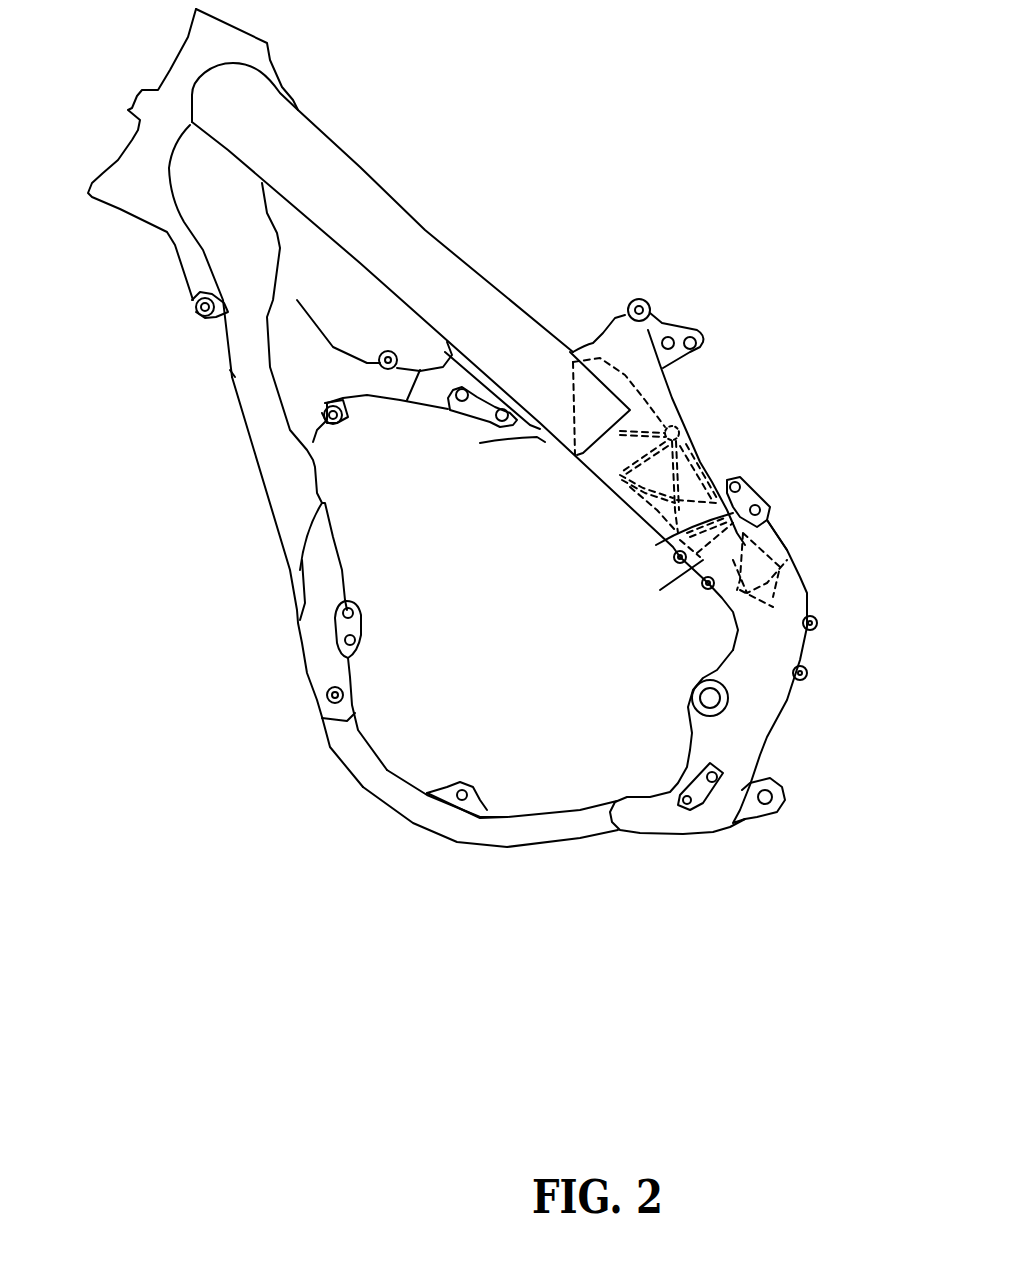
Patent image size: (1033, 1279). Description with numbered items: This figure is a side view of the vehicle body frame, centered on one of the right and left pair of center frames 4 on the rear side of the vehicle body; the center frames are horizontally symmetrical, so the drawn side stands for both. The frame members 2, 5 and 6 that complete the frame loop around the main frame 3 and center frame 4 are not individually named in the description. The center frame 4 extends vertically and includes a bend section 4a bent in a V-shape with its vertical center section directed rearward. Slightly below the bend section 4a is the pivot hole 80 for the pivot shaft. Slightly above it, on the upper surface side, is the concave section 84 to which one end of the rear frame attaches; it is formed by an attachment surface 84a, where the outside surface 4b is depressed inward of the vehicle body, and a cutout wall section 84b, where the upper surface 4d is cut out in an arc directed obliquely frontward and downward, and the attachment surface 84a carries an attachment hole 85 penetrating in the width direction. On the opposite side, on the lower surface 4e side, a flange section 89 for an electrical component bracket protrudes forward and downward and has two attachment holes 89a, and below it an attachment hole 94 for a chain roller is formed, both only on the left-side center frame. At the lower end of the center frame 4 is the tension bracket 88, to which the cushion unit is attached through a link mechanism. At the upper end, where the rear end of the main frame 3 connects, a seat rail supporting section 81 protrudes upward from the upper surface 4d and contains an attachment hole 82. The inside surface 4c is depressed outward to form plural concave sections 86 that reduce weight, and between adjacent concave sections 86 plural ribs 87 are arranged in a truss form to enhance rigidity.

The head pipe 2 is at (152, 118).
The main frame 3 is at (372, 195).
The center frame 4 is at (707, 457).
The bend section 4a is at (773, 623).
The outside surface 4b is at (663, 368).
The inside surface 4c is at (620, 472).
The upper surface 4d is at (677, 407).
The lower surface 4e is at (480, 443).
The down tube 5 is at (285, 497).
The lower frame tube 6 is at (570, 820).
The pivot hole 80 is at (698, 693).
The seat rail supporting section 81 is at (628, 320).
The attachment hole 82 is at (640, 299).
The concave section 84 is at (753, 487).
The attachment surface 84a is at (767, 503).
The cutout wall section 84b is at (656, 545).
The attachment hole 85 is at (767, 520).
The concave sections 86 is at (653, 512).
The ribs 87 is at (700, 440).
The tension bracket 88 is at (760, 808).
The flange section 89 is at (703, 560).
The attachment holes 89a is at (673, 560).
The attachment hole 94 is at (760, 603).